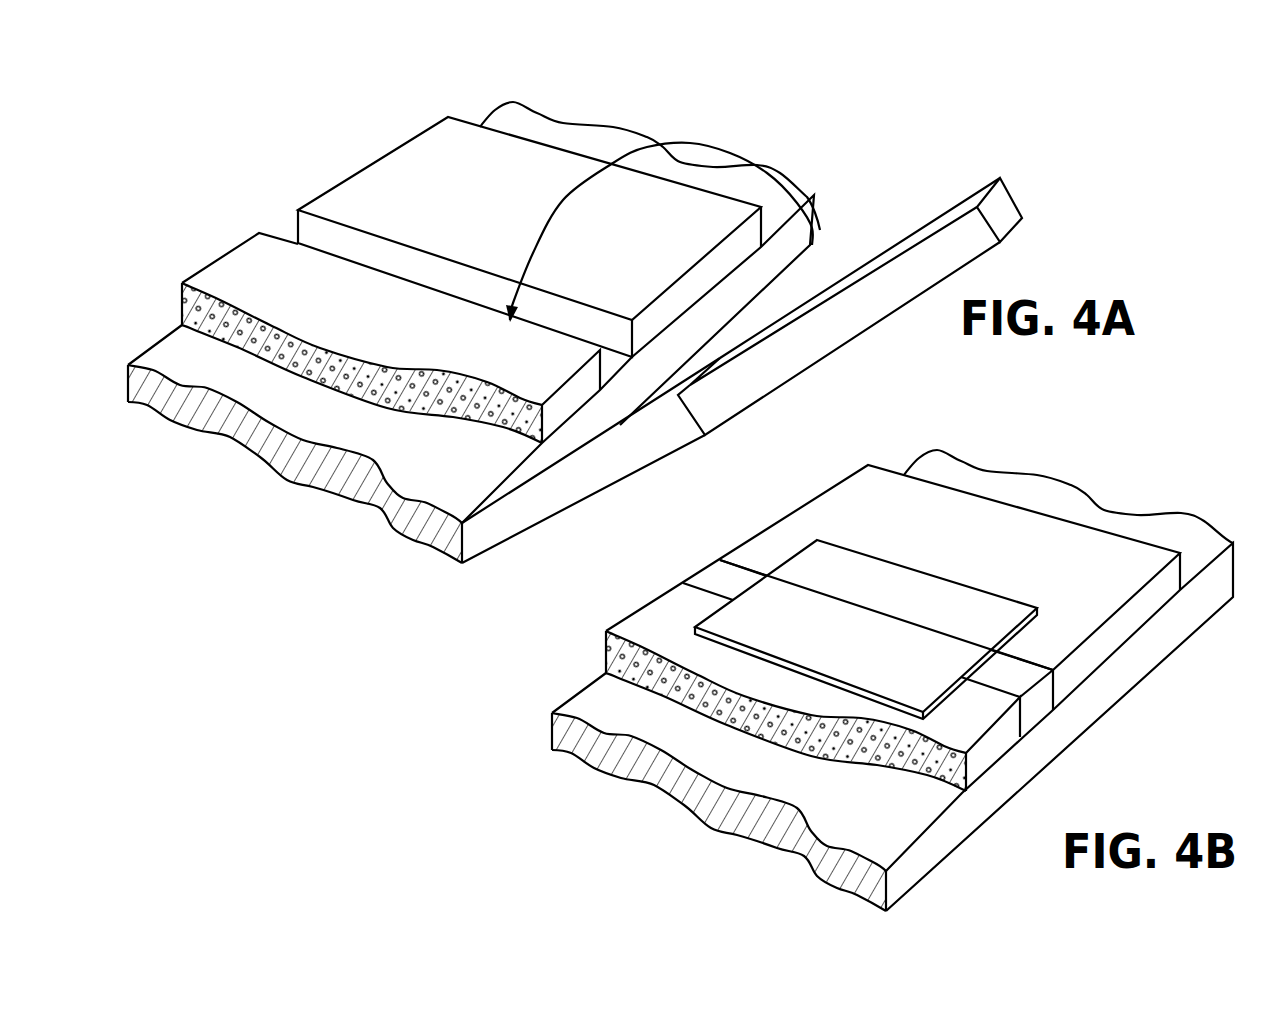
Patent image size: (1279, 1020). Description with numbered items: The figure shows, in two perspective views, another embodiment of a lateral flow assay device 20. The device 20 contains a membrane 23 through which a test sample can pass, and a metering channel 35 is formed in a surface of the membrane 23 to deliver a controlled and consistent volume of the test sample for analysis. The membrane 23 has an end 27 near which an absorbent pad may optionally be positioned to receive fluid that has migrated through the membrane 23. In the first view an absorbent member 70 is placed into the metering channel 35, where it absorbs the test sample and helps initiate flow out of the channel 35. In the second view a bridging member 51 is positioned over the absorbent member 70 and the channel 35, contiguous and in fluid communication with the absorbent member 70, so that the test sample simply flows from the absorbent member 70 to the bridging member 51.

In FIG. 4A, the lateral flow assay device 20 is at (691, 96).
In FIG. 4B, the lateral flow assay device 20 is at (1095, 440).
In FIG. 4A, the membrane 23 is at (240, 273).
In FIG. 4B, the membrane 23 is at (677, 612).
In FIG. 4B, the end of the membrane 27 is at (1110, 553).
In FIG. 4A, the metering channel 35 is at (321, 236).
In FIG. 4B, the bridging member 51 is at (950, 603).
In FIG. 4A, the absorbent member 70 is at (1003, 207).
In FIG. 4B, the absorbent member 70 is at (1023, 680).